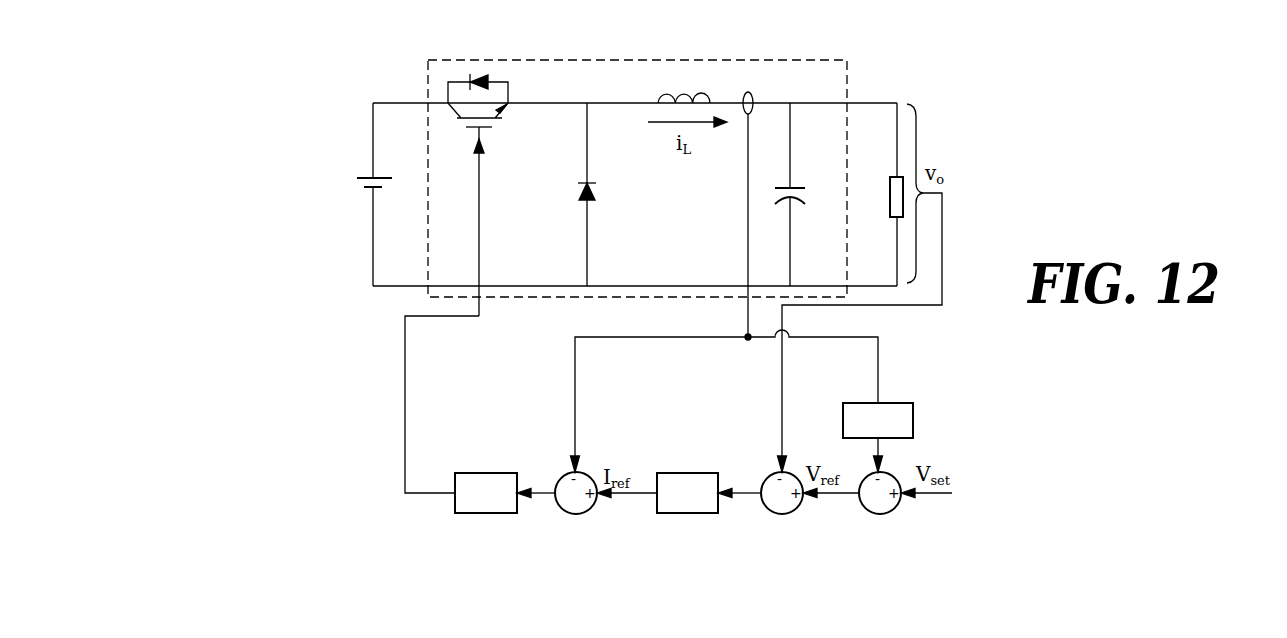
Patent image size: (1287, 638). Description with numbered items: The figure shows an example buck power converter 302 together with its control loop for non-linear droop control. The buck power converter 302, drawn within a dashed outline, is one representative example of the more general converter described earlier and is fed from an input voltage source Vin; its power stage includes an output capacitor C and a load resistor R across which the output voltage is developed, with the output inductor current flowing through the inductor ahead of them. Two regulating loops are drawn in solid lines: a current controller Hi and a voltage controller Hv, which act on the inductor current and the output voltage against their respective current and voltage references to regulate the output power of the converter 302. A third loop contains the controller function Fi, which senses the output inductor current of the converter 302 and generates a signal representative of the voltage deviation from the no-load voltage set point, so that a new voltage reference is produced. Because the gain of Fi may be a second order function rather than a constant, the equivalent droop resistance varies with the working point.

The buck power converter 302 is at (841, 60).
The input voltage source Vin is at (384, 194).
The output capacitor C is at (800, 194).
The load resistor R is at (882, 194).
The controller function F(i) Fi is at (878, 420).
The current controller Hi is at (486, 493).
The voltage controller Hv is at (687, 493).